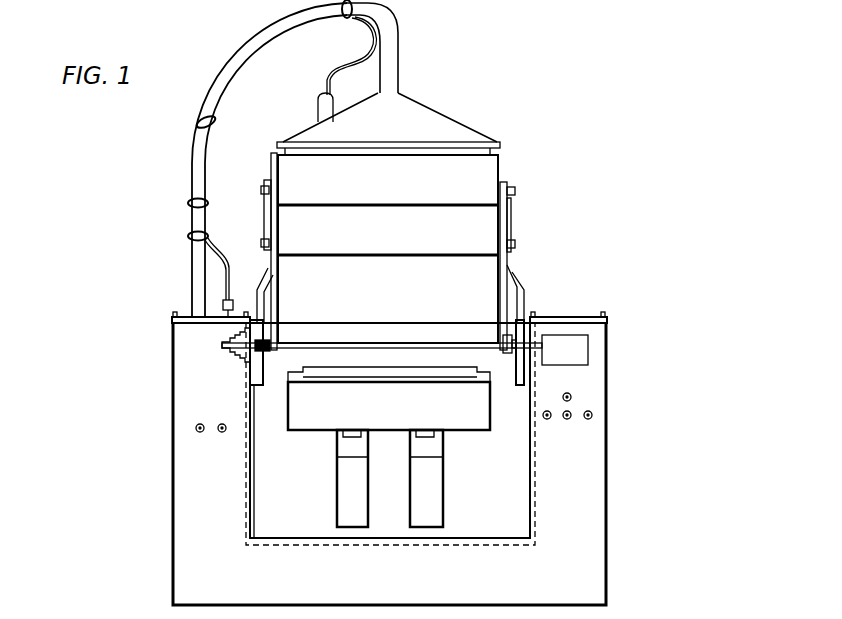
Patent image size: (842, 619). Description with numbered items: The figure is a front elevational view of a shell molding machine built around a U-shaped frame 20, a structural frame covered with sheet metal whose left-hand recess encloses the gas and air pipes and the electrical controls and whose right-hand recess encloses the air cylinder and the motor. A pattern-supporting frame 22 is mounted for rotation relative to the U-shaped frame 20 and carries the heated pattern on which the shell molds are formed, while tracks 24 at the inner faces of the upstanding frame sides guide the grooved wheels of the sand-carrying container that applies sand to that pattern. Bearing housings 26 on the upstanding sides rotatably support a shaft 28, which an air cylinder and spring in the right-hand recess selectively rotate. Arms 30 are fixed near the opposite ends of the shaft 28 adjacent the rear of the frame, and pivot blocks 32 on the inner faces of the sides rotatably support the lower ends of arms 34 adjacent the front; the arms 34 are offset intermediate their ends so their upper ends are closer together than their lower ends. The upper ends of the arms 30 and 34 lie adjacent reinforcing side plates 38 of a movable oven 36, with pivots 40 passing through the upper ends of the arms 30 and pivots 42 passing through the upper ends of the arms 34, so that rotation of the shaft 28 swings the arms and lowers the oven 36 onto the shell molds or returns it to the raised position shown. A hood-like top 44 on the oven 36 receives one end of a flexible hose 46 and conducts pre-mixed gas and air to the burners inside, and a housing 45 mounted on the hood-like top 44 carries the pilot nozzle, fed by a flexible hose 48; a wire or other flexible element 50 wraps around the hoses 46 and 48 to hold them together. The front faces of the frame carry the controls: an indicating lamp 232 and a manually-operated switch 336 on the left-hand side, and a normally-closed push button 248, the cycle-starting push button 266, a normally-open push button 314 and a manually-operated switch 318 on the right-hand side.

The U-shaped frame 20 is at (607, 560).
The pattern-supporting frame 22 is at (397, 411).
The tracks 24 is at (257, 450).
The bearing housings 26 is at (232, 360).
The shaft 28 is at (418, 343).
The arms 30 is at (270, 213).
The pivot blocks 32 is at (248, 385).
The arms 34 is at (265, 278).
The movable oven 36 is at (402, 198).
The reinforcing side plates 38 is at (508, 230).
The pivots 40 is at (261, 190).
The pivots 42 is at (261, 243).
The hood-like top 44 is at (433, 118).
The housing 45 is at (317, 104).
The flexible hose 46 is at (396, 48).
The flexible hose 48 is at (327, 72).
The wire or other flexible element 50 is at (345, 23).
The indicating lamp 232 is at (195, 429).
The normally-closed push button 248 is at (591, 419).
The normally-open push button 266 is at (572, 396).
The normally-open push button 314 is at (547, 420).
The single pole, single throw, manually-operated switch 318 is at (572, 414).
The single pole, double throw, manually-operated switch 336 is at (221, 433).